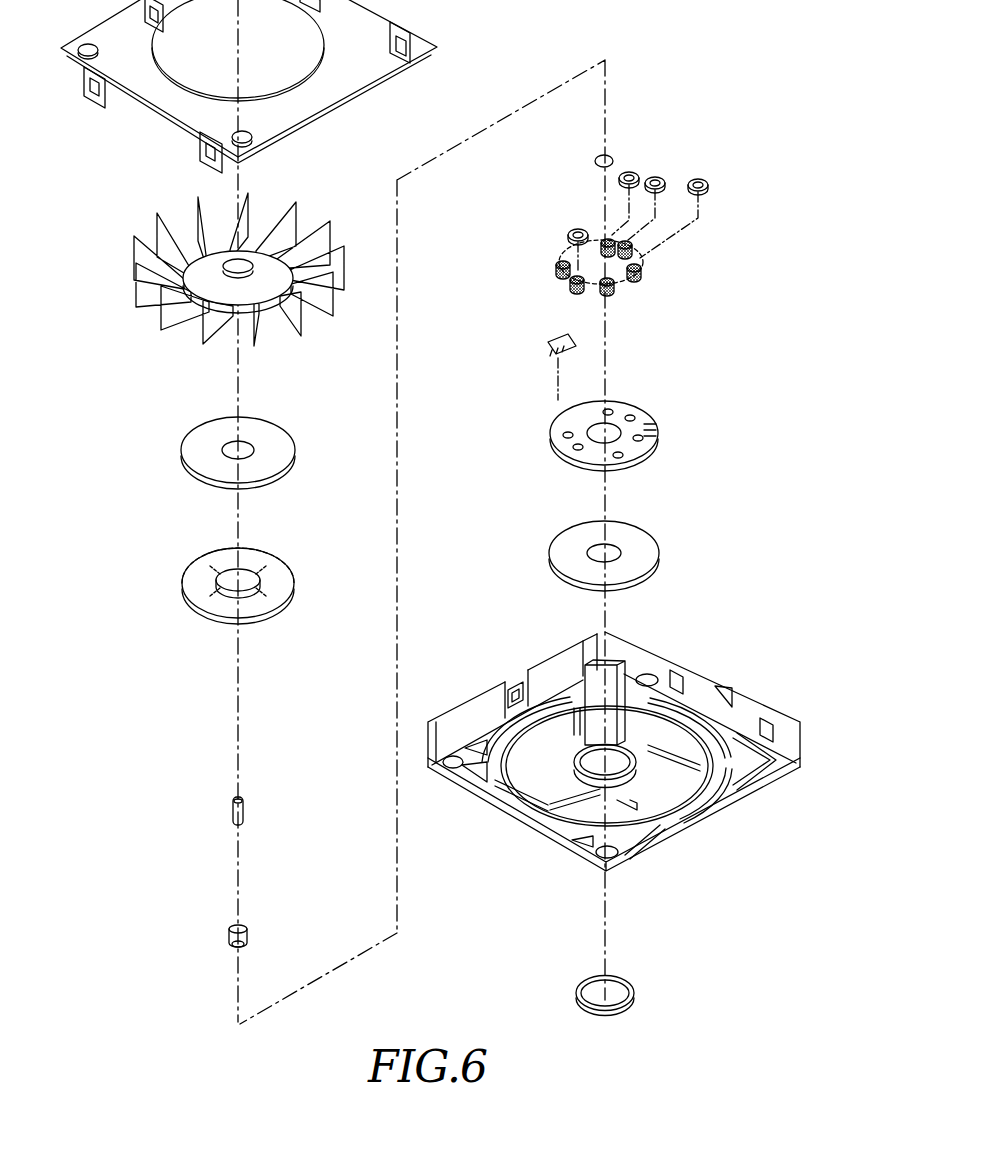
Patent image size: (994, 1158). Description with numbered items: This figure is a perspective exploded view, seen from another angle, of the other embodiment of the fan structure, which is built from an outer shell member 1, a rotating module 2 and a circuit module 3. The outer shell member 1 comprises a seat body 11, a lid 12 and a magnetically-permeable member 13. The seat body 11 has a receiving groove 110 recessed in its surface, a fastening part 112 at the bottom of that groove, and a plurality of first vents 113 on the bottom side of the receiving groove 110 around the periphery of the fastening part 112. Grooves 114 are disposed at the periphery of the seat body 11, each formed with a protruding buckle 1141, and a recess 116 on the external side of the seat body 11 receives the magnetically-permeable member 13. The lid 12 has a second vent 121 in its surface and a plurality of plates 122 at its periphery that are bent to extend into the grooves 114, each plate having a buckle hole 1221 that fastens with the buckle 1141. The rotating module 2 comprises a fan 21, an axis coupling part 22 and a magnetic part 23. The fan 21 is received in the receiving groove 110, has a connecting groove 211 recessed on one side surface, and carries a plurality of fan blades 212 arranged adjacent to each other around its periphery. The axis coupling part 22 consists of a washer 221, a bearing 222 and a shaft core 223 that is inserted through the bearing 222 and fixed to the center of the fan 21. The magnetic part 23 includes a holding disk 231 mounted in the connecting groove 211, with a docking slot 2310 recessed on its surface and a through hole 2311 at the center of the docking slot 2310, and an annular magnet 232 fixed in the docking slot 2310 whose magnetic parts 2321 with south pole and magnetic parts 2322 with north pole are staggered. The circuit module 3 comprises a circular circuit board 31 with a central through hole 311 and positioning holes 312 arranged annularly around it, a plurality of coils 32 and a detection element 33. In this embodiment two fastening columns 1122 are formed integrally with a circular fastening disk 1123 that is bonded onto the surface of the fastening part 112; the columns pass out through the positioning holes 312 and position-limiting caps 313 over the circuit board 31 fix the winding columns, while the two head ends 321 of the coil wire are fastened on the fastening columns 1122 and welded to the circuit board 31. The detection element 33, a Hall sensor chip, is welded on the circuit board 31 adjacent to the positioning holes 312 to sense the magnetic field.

The outer shell member 1 is at (705, 640).
The seat body 11 is at (614, 755).
The receiving groove 110 is at (620, 808).
The fastening part 112 is at (553, 763).
The first vents 113 is at (532, 800).
The grooves 114 is at (614, 691).
The buckle 1141 is at (512, 688).
The recess 116 is at (586, 787).
The fastening columns 1122 is at (581, 546).
The fastening disk 1123 is at (613, 548).
The lid 12 is at (281, 86).
The second vent 121 is at (268, 97).
The plates 122 is at (292, 86).
The buckle hole 1221 is at (407, 50).
The magnetically-permeable member 13 is at (635, 993).
The rotating module 2 is at (120, 190).
The fan 21 is at (207, 284).
The connecting groove 211 is at (198, 318).
The fan blades 212 is at (134, 279).
The axis coupling part 22 is at (138, 812).
The washer 221 is at (610, 160).
The bearing 222 is at (229, 937).
The shaft core 223 is at (232, 812).
The magnetic part 23 is at (150, 528).
The holding disk 231 is at (236, 457).
The docking slot 2310 is at (206, 478).
The through hole 2311 is at (250, 456).
The annular magnet 232 is at (284, 587).
The magnetic parts with south magnetic pole 2321 is at (275, 612).
The magnetic parts with north magnetic pole 2322 is at (296, 590).
The circuit module 3 is at (680, 395).
The circuit board 31 is at (588, 439).
The through hole 311 is at (612, 445).
The positioning holes 312 is at (565, 438).
The position-limiting caps 313 is at (578, 230).
The coils 32 is at (594, 263).
The head ends 321 is at (560, 262).
The detection element 33 is at (548, 342).